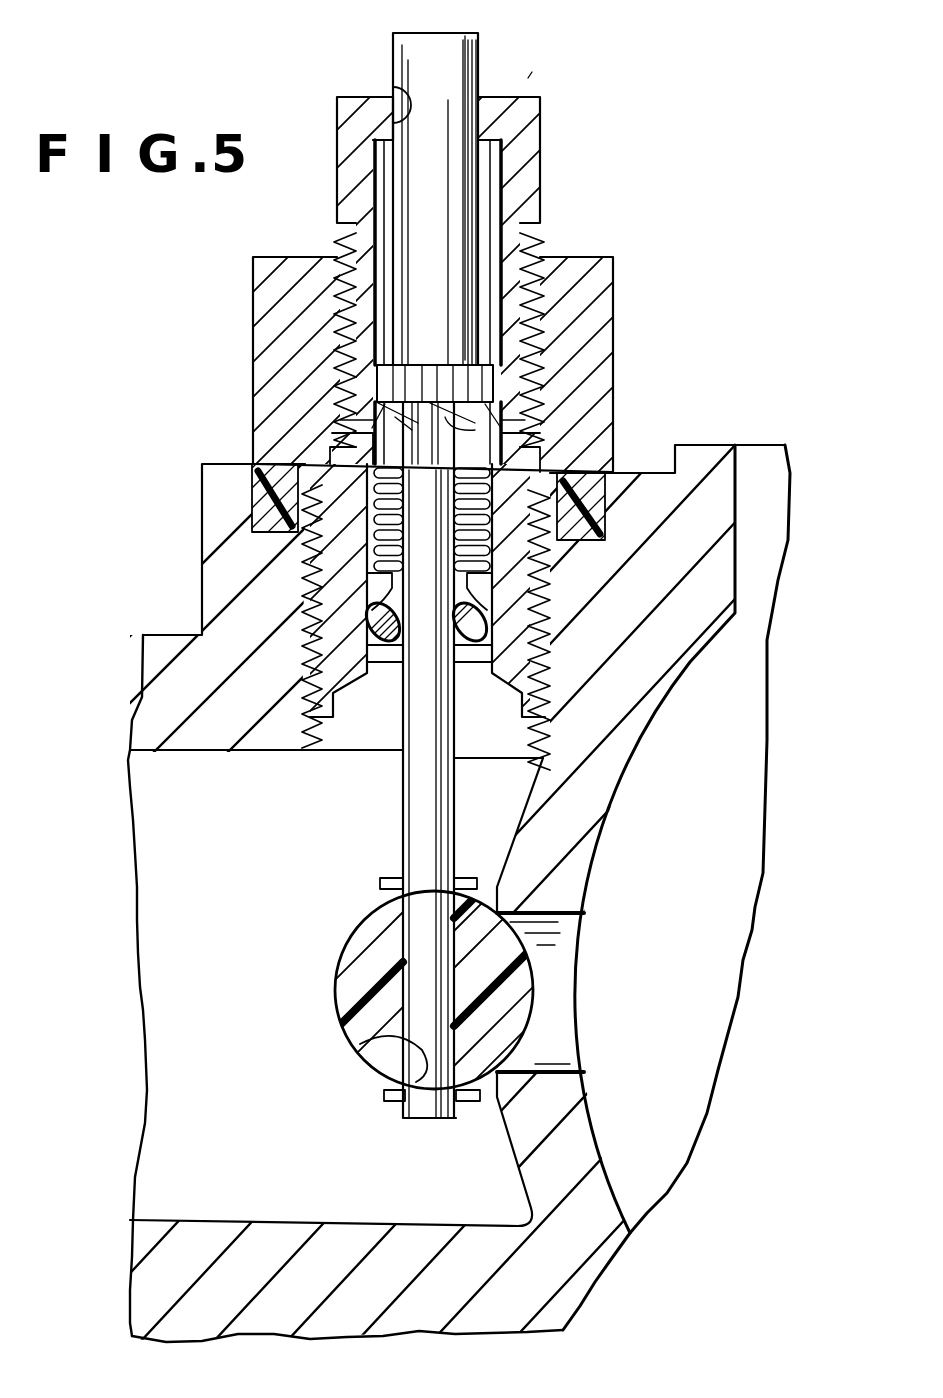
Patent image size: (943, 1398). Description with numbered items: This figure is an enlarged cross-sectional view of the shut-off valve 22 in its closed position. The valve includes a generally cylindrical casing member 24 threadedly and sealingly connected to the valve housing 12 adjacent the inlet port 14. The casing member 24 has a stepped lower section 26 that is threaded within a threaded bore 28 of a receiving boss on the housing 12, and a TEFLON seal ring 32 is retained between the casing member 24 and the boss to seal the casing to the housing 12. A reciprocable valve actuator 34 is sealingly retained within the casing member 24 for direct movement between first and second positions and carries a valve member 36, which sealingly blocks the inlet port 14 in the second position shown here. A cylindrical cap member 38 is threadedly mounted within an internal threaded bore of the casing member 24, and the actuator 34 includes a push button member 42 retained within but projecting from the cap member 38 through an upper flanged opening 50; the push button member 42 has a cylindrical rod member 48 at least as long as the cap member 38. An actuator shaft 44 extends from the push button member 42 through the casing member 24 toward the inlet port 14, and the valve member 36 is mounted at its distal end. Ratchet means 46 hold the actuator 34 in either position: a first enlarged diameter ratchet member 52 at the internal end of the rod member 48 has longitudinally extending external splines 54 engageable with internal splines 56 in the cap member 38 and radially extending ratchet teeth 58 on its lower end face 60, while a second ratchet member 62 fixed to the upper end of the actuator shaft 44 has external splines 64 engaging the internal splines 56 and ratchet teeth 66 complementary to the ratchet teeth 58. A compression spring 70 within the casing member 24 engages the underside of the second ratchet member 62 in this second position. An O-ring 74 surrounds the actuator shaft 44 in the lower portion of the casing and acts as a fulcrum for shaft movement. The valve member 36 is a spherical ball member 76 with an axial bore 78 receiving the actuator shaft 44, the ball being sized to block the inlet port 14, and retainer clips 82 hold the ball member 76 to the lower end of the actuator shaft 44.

The valve housing 12 is at (612, 815).
The inlet port 14 is at (565, 960).
The shut-off valve 22 is at (535, 74).
The casing member 24 is at (600, 262).
The stepped lower section 26 is at (340, 555).
The threaded bore 28 is at (365, 657).
The seal ring 32 is at (262, 480).
The valve actuator 34 is at (484, 262).
The valve member 36 is at (382, 967).
The cap member 38 is at (540, 98).
The push button member 42 is at (394, 42).
The actuator shaft 44 is at (420, 790).
The ratchet means 46 is at (355, 425).
The rod member 48 is at (470, 42).
The upper flanged opening 50 is at (400, 98).
The first ratchet member 52 is at (497, 370).
The external splines 54 is at (370, 400).
The internal splines 56 is at (502, 187).
The ratchet teeth 58 is at (380, 395).
The lower end face 60 is at (487, 405).
The second ratchet member 62 is at (360, 437).
The external splines 64 is at (575, 452).
The ratchet teeth 66 is at (515, 425).
The compression spring 70 is at (367, 512).
The O-ring 74 is at (488, 630).
The ball member 76 is at (350, 980).
The axial bore 78 is at (360, 1044).
The retainer clips 82 is at (380, 882).